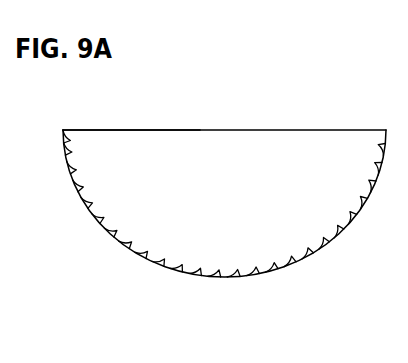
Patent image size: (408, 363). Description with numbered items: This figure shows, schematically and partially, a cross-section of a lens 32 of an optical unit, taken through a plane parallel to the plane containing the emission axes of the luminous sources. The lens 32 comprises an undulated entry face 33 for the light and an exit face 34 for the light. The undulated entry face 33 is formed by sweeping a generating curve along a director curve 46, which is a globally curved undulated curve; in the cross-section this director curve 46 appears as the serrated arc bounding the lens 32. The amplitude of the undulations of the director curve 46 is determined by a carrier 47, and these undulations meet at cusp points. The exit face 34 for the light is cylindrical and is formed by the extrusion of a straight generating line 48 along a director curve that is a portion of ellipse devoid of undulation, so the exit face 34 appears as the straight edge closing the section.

The lens 32 is at (235, 234).
The undulated entry face 33 is at (313, 255).
The exit face 34 is at (263, 130).
The director curve 46 is at (367, 201).
The carrier 47 is at (102, 226).
The straight generating line 48 is at (130, 130).